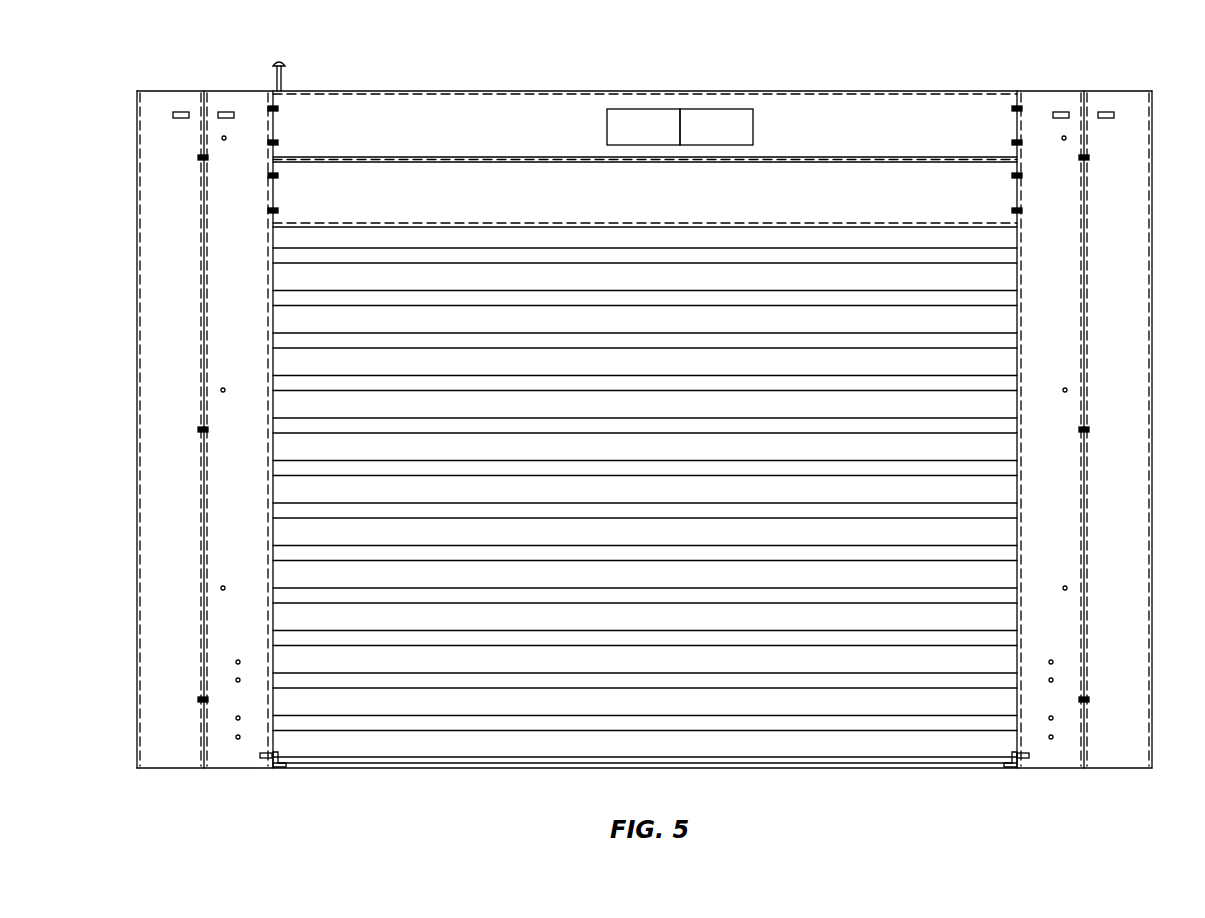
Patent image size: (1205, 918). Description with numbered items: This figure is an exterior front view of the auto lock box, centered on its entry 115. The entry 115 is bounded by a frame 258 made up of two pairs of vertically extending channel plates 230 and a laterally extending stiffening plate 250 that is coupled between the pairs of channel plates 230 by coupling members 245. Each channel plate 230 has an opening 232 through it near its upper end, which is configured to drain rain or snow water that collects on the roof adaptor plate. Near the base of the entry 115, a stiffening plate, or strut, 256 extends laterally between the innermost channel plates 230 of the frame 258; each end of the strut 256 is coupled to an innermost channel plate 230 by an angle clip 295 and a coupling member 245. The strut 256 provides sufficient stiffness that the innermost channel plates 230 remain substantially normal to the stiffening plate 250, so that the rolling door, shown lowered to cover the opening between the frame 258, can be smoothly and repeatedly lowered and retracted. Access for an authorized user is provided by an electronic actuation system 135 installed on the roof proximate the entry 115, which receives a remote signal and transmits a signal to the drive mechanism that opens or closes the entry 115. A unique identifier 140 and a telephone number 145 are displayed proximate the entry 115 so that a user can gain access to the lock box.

The entry 115 is at (751, 59).
The electronic actuation system 135 is at (278, 82).
The unique identifier 140 is at (630, 108).
The telephone number 145 is at (717, 108).
The channel plate 230 is at (186, 425).
The opening 232 is at (226, 111).
The coupling member 245 is at (263, 758).
The stiffening plate 250 is at (683, 201).
The strut 256 is at (519, 768).
The frame 258 is at (375, 90).
The angle clip 295 is at (282, 762).